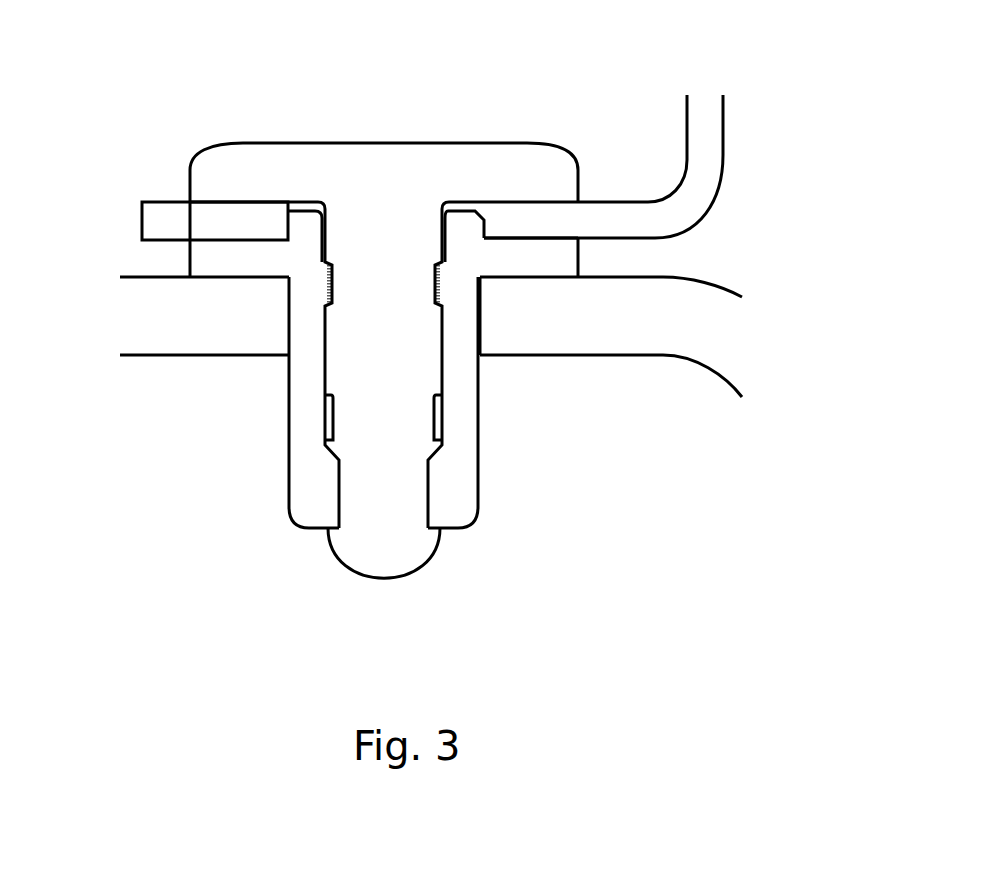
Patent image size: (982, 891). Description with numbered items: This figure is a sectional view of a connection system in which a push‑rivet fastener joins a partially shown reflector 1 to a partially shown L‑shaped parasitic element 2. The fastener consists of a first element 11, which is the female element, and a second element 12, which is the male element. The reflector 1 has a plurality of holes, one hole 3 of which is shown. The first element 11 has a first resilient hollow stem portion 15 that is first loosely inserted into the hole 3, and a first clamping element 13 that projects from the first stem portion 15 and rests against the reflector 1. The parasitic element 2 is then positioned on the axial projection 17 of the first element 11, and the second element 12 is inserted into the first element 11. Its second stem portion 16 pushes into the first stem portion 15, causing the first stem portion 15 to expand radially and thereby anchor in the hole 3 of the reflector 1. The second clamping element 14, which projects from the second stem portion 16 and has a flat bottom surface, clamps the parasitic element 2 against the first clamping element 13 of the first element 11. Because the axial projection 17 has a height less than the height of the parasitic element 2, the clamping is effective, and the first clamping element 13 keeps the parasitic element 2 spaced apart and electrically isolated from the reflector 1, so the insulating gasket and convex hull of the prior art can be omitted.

The reflector 1 is at (683, 333).
The parasitic element 2 is at (703, 155).
The hole 3 is at (482, 325).
The first element 11 is at (462, 427).
The second element 12 is at (362, 180).
The first clamping element 13 is at (543, 253).
The second clamping element 14 is at (550, 165).
The first stem portion 15 is at (450, 507).
The second stem portion 16 is at (387, 553).
The axial projection 17 is at (300, 230).